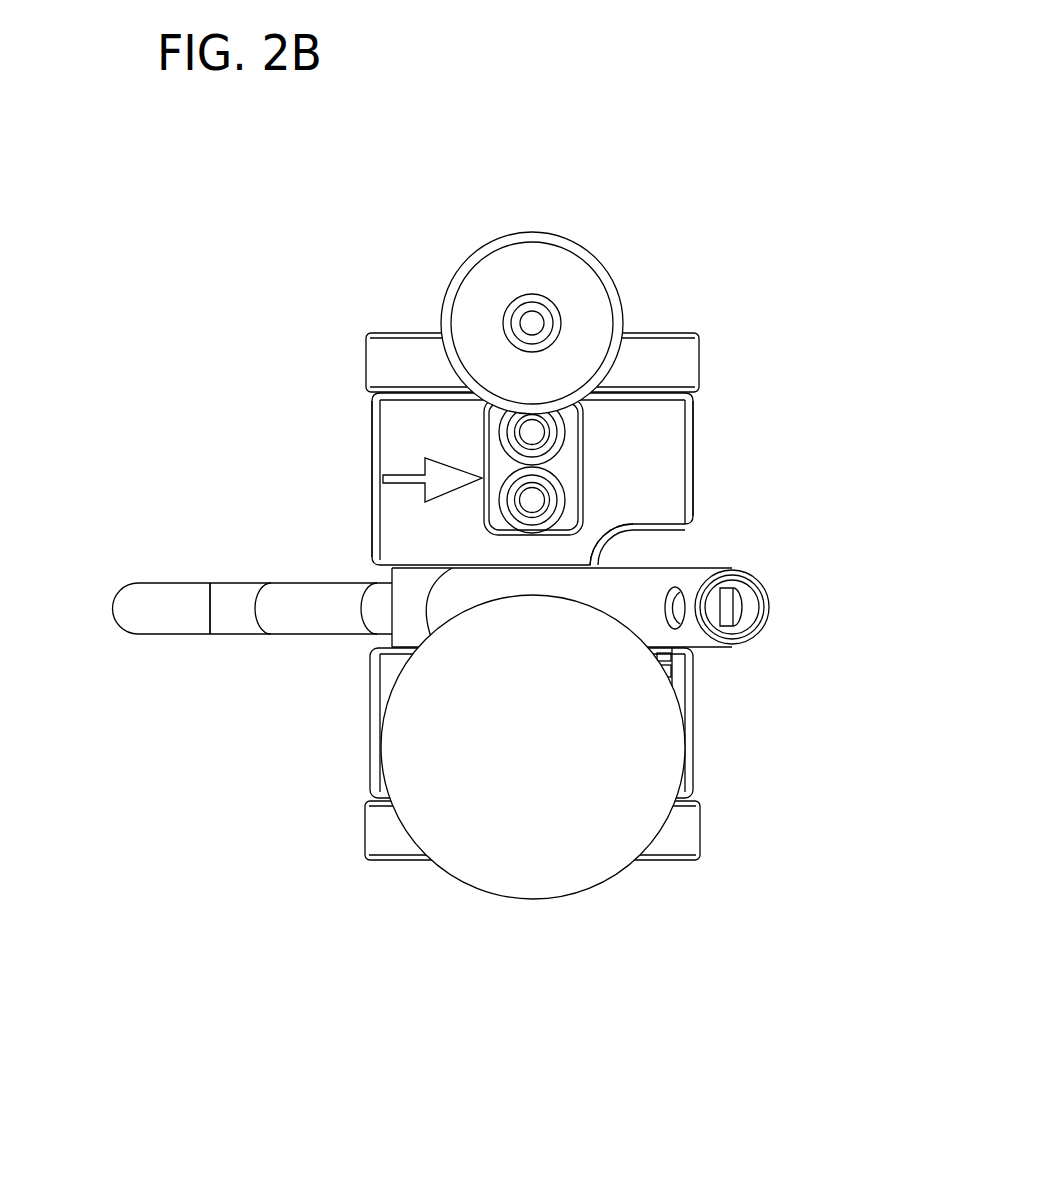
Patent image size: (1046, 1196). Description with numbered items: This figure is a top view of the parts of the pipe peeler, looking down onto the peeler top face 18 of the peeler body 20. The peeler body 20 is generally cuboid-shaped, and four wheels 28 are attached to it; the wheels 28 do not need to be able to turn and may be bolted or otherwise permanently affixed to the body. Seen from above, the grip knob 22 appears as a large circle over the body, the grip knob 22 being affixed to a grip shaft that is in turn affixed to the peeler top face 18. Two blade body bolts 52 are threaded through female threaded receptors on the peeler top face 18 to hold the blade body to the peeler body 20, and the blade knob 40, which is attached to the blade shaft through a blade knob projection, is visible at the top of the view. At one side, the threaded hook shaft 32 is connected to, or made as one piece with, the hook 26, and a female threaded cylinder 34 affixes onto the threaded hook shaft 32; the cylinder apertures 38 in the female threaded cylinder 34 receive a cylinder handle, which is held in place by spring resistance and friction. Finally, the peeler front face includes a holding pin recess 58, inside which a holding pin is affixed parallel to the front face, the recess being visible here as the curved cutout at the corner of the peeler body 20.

The peeler top face 18 is at (645, 486).
The peeler body 20 is at (368, 407).
The grip knob 22 is at (478, 892).
The hook 26 is at (165, 580).
The wheels 28 is at (370, 332).
The threaded hook shaft 32 is at (315, 637).
The female threaded cylinder 34 is at (673, 568).
The cylinder apertures 38 is at (685, 615).
The blade knob 40 is at (612, 273).
The blade body bolts 52 is at (507, 491).
The holding pin recess 58 is at (627, 550).